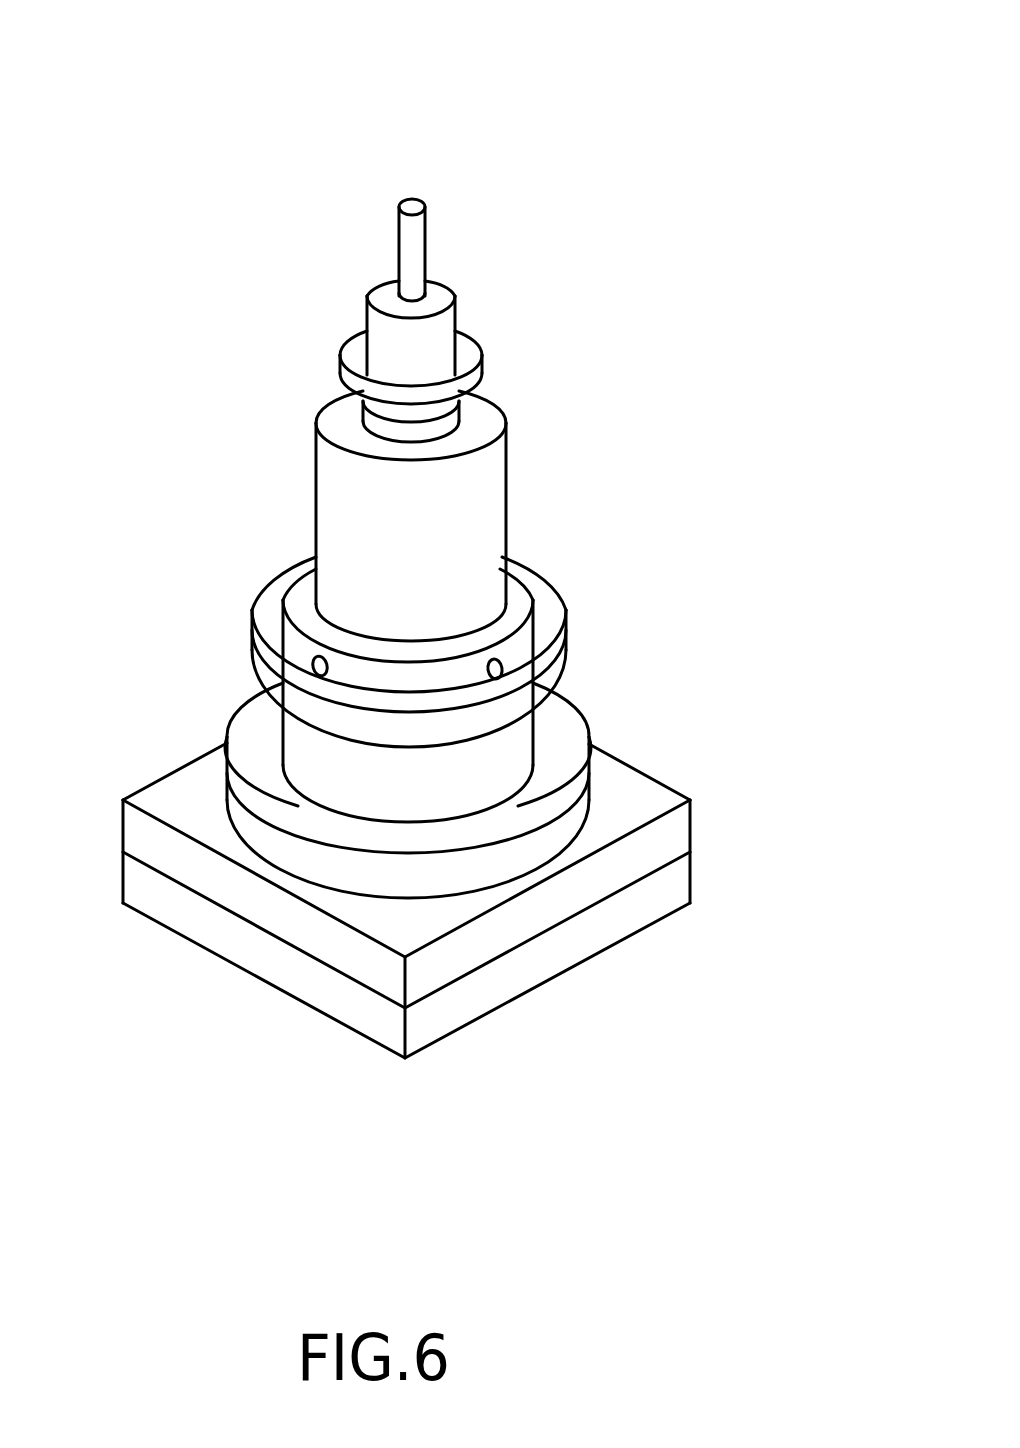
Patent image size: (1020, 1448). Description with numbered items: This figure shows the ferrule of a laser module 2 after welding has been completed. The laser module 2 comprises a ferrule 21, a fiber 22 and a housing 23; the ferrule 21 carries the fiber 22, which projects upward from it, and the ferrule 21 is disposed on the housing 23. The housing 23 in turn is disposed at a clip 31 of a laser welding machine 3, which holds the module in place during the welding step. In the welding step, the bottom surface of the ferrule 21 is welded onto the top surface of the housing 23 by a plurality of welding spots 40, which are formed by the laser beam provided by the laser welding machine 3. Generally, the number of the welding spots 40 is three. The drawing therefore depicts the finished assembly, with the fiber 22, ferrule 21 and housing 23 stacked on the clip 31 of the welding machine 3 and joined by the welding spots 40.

The laser module 2 is at (485, 187).
The fiber 22 is at (487, 333).
The ferrule 21 is at (484, 508).
The housing 23 is at (487, 765).
The welding spots 40 is at (316, 658).
The clip 31 is at (333, 860).
The welding machine 3 is at (532, 1022).